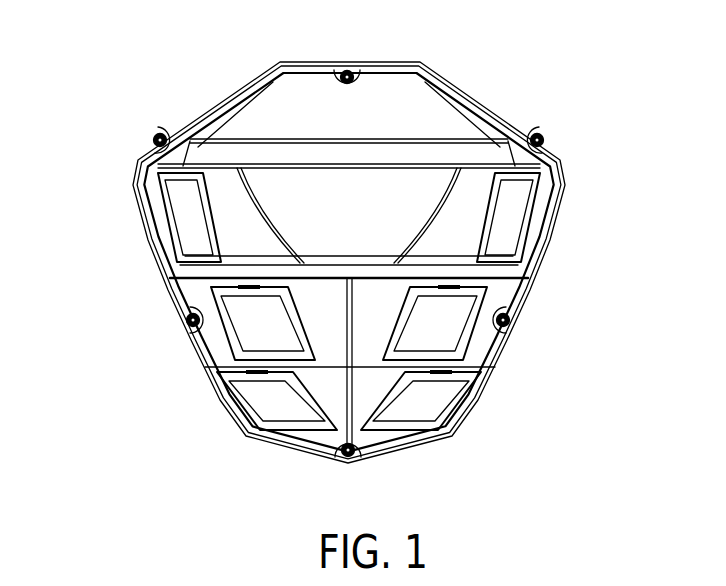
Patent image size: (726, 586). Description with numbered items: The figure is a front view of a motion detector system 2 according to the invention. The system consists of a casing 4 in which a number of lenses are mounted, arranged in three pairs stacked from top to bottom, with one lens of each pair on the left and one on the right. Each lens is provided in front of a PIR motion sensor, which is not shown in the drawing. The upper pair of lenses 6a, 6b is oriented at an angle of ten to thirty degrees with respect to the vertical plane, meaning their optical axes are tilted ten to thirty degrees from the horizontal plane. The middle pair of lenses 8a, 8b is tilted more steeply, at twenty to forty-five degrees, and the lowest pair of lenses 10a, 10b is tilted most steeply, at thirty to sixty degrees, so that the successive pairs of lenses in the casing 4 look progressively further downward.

The motion detector system 2 is at (170, 72).
The casing 4 is at (462, 107).
The lens 6a is at (522, 193).
The lens 6b is at (167, 193).
The lens 8a is at (443, 333).
The lens 8b is at (240, 323).
The lens 10a is at (425, 407).
The lens 10b is at (267, 410).